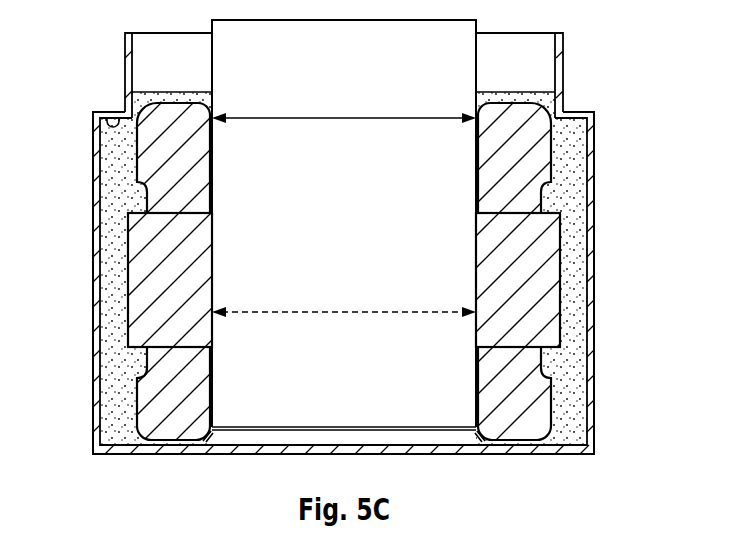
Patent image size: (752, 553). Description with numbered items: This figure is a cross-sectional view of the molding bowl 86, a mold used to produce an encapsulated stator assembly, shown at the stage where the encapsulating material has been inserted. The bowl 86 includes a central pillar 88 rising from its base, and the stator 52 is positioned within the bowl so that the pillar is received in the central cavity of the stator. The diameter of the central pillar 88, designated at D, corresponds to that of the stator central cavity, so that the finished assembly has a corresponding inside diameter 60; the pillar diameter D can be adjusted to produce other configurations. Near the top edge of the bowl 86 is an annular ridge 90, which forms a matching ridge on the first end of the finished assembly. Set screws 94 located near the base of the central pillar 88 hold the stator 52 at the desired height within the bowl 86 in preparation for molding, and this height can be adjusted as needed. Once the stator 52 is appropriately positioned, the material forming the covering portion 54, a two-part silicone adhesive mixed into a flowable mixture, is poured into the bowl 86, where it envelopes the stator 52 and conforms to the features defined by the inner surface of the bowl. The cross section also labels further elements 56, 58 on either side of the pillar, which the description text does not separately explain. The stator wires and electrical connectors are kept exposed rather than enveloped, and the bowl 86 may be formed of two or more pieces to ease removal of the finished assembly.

The stator 52 is at (145, 283).
The covering portion 54 is at (567, 146).
The second annular block 56 is at (542, 317).
The seal rings 58 is at (147, 168).
The inside diameter 60 is at (352, 312).
The molding bowl 86 is at (617, 262).
The central pillar 88 is at (453, 70).
The annular ridge 90 is at (118, 110).
The set screws 94 is at (205, 442).
The diameter of the central pillar D is at (351, 118).